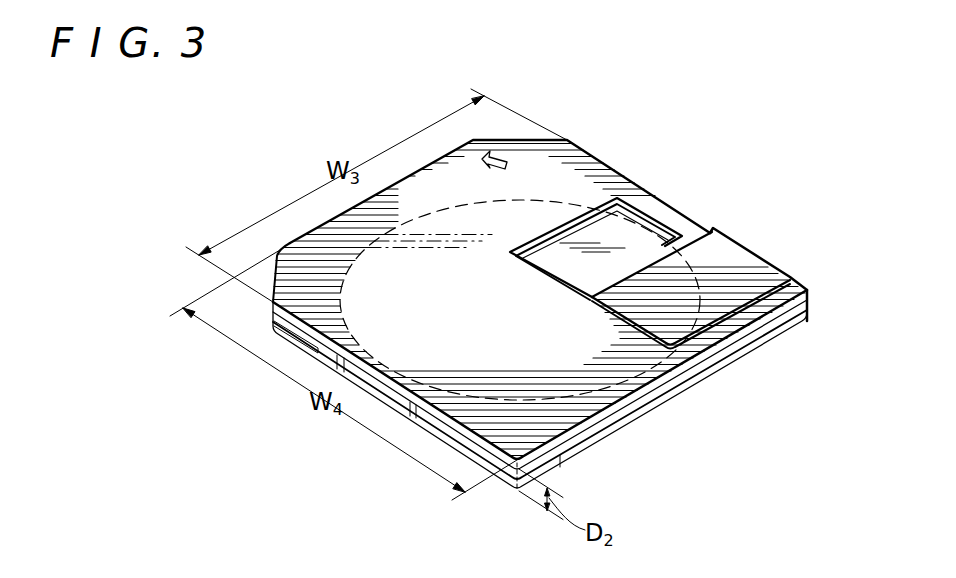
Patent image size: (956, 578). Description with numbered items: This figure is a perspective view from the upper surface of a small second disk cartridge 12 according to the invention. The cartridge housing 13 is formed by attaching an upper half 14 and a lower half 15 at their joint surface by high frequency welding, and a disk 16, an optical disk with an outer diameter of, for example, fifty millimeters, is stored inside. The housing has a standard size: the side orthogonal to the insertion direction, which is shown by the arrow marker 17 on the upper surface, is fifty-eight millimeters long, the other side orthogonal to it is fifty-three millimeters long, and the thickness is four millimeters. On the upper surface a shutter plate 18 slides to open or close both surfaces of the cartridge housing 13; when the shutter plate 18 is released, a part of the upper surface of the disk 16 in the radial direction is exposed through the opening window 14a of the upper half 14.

The second disk cartridge 12 is at (570, 284).
The cartridge housing 13 is at (570, 308).
The upper half 14 is at (549, 303).
The opening window 14a is at (653, 212).
The lower half 15 is at (750, 350).
The disk 16 is at (676, 218).
The arrow marker 17 is at (530, 160).
The shutter plate 18 is at (743, 270).